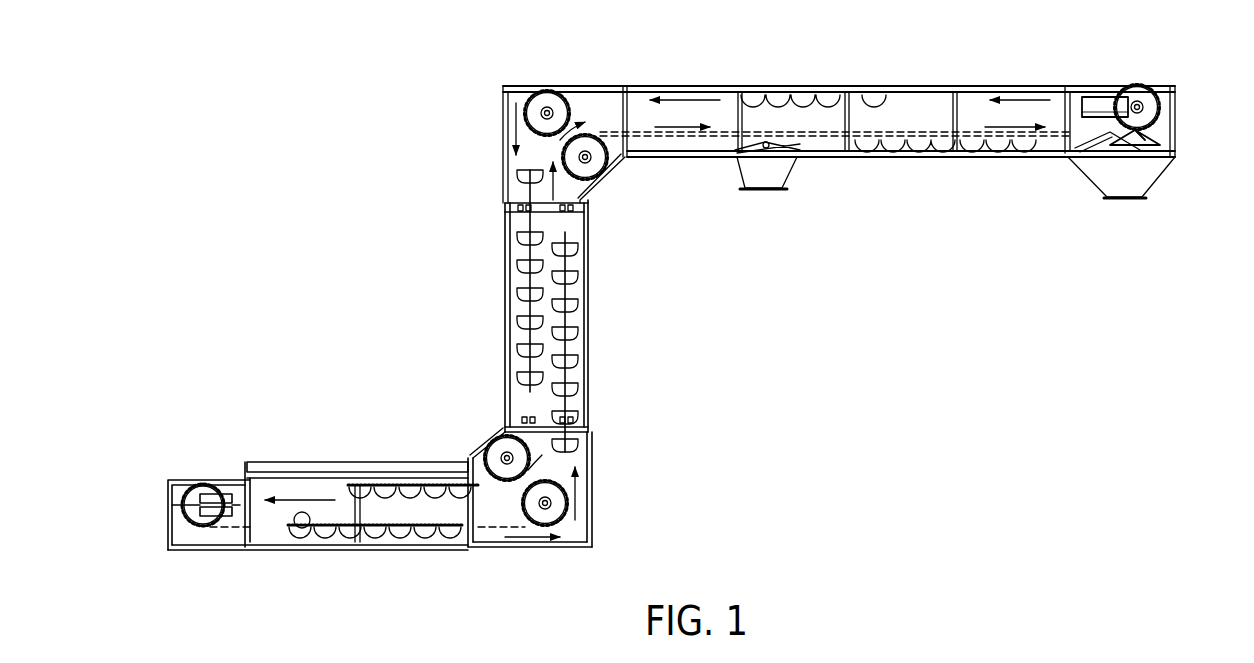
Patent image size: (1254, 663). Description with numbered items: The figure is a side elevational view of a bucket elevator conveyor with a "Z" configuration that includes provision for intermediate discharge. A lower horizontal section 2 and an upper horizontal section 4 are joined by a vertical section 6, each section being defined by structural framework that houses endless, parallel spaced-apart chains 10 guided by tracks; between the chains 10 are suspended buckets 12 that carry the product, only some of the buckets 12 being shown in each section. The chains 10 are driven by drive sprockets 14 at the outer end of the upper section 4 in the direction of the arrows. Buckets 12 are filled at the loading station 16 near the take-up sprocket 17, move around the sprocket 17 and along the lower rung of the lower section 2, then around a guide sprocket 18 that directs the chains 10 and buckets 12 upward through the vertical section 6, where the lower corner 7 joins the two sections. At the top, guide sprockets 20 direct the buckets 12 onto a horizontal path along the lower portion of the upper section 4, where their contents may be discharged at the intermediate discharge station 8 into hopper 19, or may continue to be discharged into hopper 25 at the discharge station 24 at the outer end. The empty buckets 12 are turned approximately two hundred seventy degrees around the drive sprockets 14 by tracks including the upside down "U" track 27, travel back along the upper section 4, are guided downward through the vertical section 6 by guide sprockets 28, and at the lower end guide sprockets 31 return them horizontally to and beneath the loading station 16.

The lower horizontal section 2 is at (327, 554).
The upper horizontal section 4 is at (668, 80).
The vertical section 6 is at (600, 335).
The lower corner section 7 is at (600, 480).
The intermediate discharge station 8 is at (830, 170).
The chains 10 is at (680, 138).
The buckets 12 is at (793, 95).
The drive sprockets 14 is at (1135, 88).
The loading station 16 is at (310, 462).
The take-up sprocket 17 is at (210, 532).
The guide sprocket 18 is at (548, 508).
The hopper 19 is at (790, 162).
The guide sprockets 20 is at (605, 172).
The discharge station 24 is at (1092, 132).
The hopper 25 is at (1100, 175).
The upside down U track 27 is at (1130, 128).
The guide sprockets 28 is at (547, 92).
The guide sprockets 31 is at (500, 440).